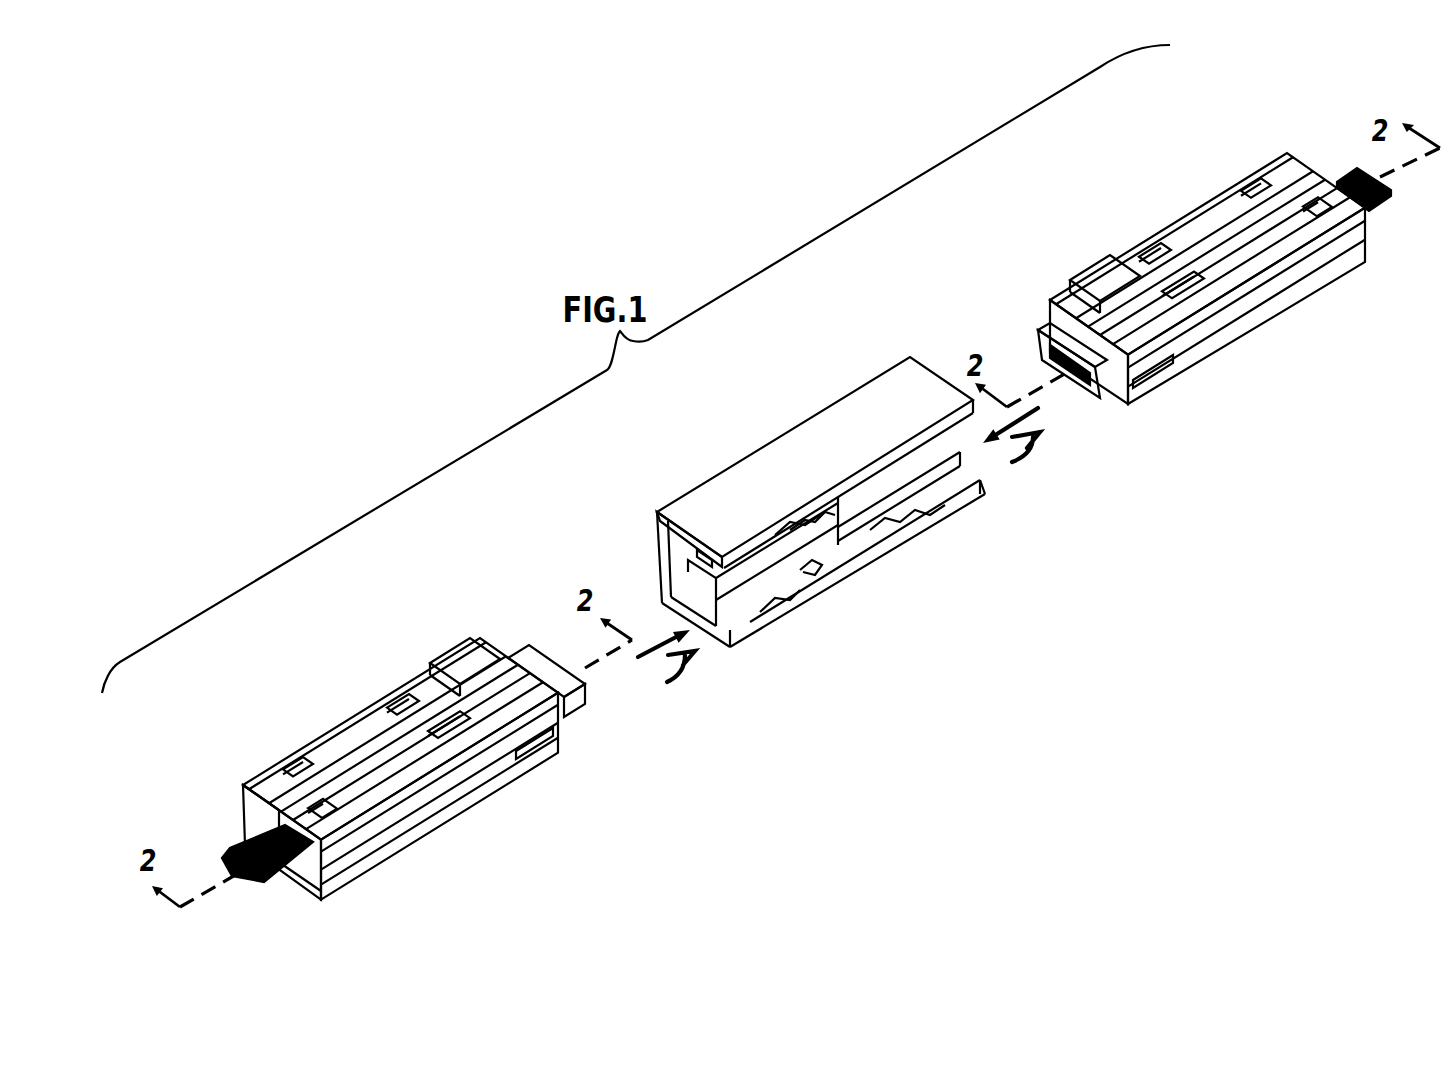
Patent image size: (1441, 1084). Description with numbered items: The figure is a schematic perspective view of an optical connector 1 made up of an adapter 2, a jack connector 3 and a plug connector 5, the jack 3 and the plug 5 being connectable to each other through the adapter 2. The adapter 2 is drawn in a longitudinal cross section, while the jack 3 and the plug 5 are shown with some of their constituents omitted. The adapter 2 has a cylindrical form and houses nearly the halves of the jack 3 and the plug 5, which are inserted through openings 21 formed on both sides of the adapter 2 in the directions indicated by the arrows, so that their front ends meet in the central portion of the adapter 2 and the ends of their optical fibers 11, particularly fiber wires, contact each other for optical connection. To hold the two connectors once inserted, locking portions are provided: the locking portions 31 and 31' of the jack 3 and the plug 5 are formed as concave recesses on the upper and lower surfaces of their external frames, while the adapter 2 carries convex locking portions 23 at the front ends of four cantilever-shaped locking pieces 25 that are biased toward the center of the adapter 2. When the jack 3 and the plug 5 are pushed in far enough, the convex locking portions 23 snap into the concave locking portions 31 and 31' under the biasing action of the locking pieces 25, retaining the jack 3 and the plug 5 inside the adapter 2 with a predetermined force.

The optical connector 1 is at (610, 493).
The adapter 2 is at (791, 525).
The jack connector 3 is at (414, 731).
The plug connector 5 is at (1201, 293).
The optical fibers 11 is at (256, 882).
The openings 21 is at (678, 557).
The locking portions 23 is at (813, 512).
The locking pieces 25 is at (805, 527).
The locking portion 31 is at (1103, 252).
The locking portion 31' is at (434, 629).